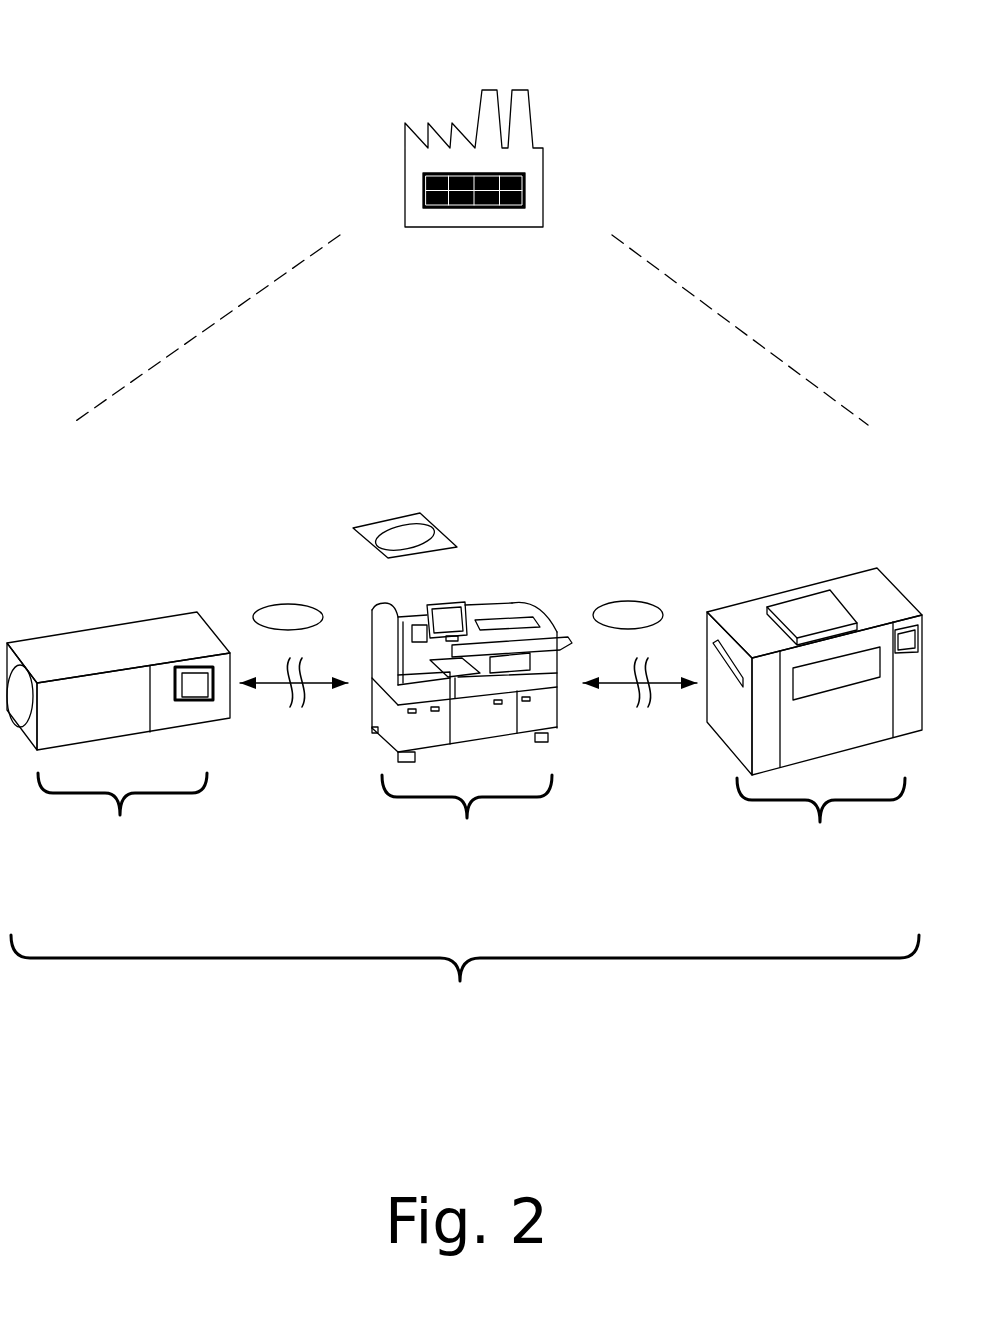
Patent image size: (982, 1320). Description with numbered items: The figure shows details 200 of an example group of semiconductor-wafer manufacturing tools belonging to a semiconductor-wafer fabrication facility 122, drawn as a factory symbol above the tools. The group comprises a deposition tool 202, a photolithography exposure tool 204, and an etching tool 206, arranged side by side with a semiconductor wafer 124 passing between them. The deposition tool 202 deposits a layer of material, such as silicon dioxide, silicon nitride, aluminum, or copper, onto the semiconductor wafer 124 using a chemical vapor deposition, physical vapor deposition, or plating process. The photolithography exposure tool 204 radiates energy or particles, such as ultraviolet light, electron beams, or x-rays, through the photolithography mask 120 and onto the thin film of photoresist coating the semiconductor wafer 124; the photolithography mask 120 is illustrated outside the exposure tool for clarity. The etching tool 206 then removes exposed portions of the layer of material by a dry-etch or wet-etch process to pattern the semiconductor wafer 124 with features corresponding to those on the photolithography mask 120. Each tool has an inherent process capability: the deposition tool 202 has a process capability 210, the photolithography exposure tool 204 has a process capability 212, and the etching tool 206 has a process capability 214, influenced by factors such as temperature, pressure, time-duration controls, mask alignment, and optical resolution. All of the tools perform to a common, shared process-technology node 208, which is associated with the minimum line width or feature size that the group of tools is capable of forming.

The details 200 is at (129, 41).
The semiconductor-wafer fabrication facility 122 is at (543, 150).
The deposition tool 202 is at (102, 625).
The photolithography exposure tool 204 is at (443, 600).
The etching tool 206 is at (793, 590).
The photolithography mask 120 is at (395, 522).
The semiconductor wafer 124 is at (277, 603).
The process capability 210 is at (122, 839).
The process capability 212 is at (467, 842).
The process capability 214 is at (821, 844).
The process-technology node 208 is at (465, 1003).